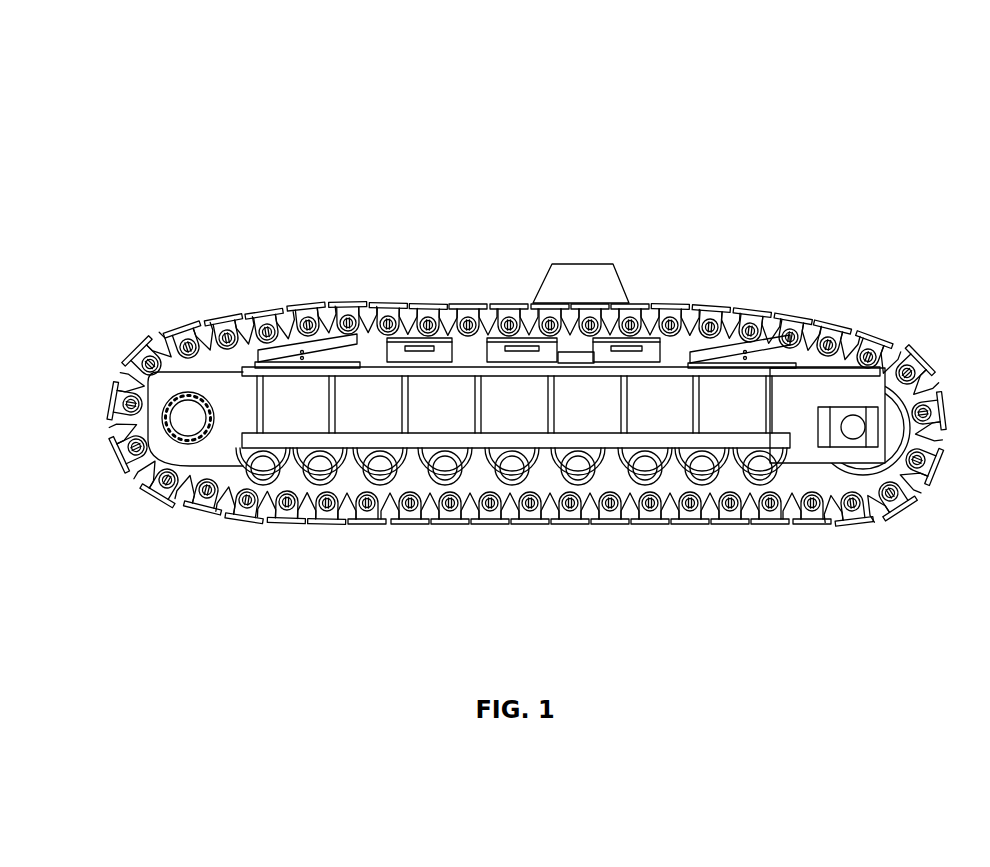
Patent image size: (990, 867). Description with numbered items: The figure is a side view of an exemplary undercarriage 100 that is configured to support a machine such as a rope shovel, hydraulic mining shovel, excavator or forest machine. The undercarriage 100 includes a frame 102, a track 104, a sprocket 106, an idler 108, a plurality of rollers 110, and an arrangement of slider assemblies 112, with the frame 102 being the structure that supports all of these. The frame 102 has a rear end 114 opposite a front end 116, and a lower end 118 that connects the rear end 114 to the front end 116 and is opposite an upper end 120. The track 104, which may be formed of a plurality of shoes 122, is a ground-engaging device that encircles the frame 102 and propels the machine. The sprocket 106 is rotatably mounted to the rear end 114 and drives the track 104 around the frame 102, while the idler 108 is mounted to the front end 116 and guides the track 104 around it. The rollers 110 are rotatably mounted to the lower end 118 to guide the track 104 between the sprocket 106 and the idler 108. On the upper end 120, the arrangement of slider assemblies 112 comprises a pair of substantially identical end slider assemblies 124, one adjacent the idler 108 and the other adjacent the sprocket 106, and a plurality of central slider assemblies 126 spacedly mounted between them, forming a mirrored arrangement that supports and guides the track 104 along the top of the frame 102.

The undercarriage 100 is at (158, 66).
The frame 102 is at (558, 417).
The track 104 is at (860, 358).
The sprocket 106 is at (180, 452).
The idler 108 is at (890, 493).
The plurality of rollers 110 is at (498, 418).
The arrangement of slider assemblies 112 is at (452, 283).
The rear end 114 is at (217, 372).
The front end 116 is at (862, 392).
The lower end 118 is at (773, 442).
The upper end 120 is at (807, 370).
The shoes 122 is at (128, 422).
The end slider assembly 124 is at (713, 366).
The central slider assembly 126 is at (636, 357).